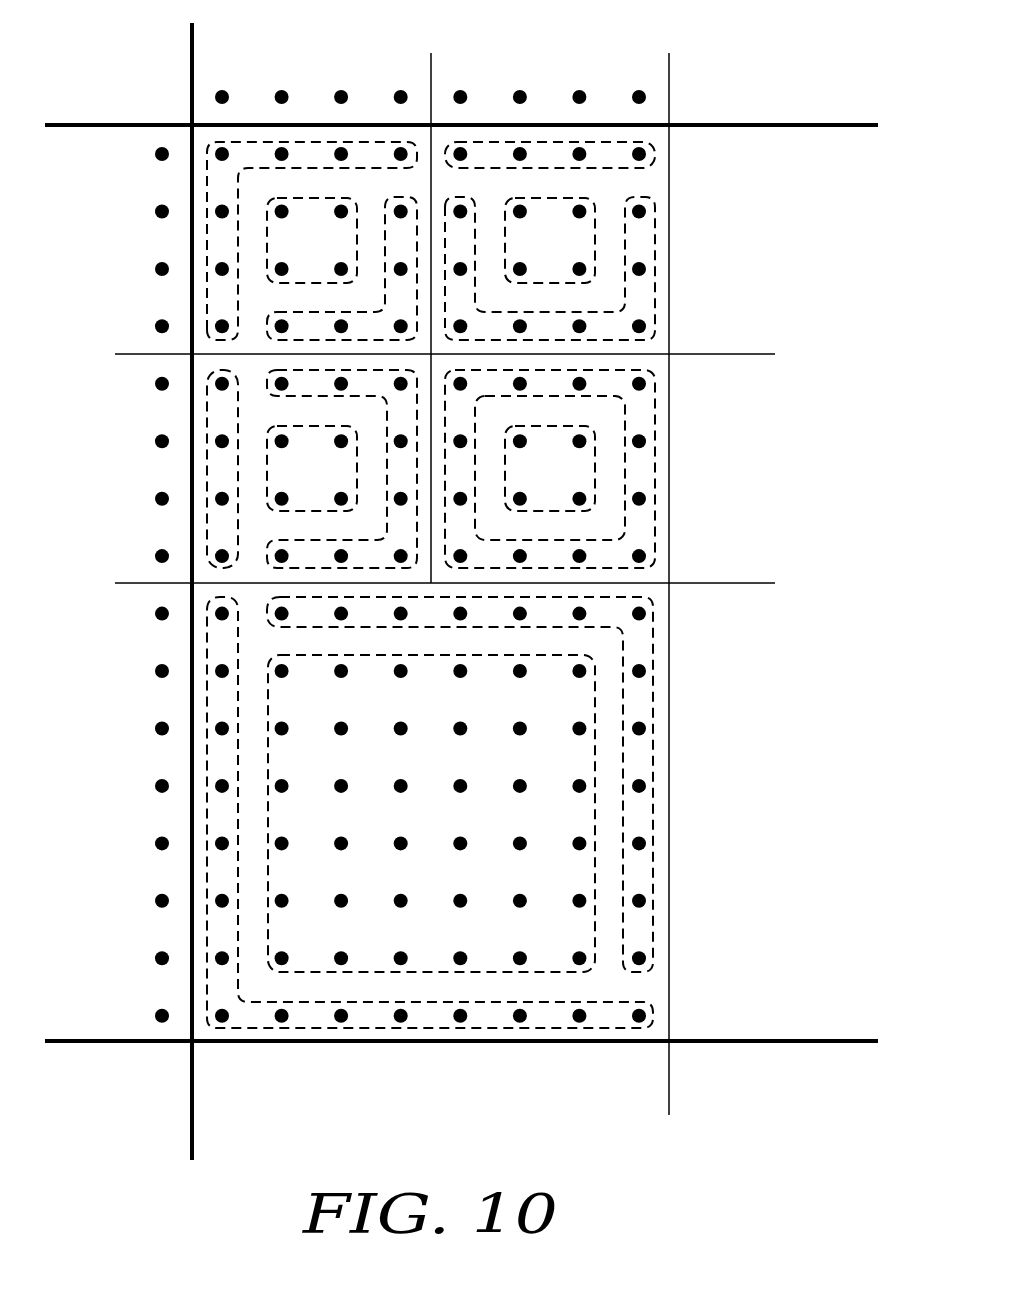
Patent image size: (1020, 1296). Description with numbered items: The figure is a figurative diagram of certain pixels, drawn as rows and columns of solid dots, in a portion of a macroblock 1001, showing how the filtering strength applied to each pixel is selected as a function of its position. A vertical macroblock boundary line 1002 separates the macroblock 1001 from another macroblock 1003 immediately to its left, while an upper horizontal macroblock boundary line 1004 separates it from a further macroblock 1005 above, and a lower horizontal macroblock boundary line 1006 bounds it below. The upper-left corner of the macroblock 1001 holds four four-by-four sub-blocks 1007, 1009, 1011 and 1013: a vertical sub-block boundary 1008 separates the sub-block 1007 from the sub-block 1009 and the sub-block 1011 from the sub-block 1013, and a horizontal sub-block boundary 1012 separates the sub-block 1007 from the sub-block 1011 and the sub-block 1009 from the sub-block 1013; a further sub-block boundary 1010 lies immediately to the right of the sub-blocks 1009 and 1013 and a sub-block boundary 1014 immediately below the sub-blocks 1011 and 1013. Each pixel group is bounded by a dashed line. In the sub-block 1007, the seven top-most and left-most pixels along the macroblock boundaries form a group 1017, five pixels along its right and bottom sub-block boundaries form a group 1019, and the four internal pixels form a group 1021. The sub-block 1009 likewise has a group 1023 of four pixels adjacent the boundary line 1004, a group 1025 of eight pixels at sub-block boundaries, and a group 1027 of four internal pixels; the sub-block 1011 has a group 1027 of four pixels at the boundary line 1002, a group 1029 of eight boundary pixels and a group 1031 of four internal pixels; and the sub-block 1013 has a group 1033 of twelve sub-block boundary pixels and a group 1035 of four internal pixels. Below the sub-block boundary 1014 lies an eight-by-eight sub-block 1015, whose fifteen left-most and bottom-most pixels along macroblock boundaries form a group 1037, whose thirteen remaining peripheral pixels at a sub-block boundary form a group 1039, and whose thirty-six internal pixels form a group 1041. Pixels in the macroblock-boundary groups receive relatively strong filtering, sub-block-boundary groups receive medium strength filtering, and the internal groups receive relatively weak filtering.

The macroblock 1001 is at (772, 827).
The vertical macroblock boundary line 1002 is at (192, 72).
The macroblock 1003 is at (115, 827).
The upper horizontal macroblock boundary line 1004 is at (100, 125).
The macroblock 1005 is at (577, 22).
The lower horizontal macroblock boundary line 1006 is at (95, 1041).
The 4×4 sub-block 1007 is at (337, 255).
The vertical sub-block boundary 1008 is at (431, 72).
The 4×4 sub-block 1009 is at (575, 255).
The sub-block boundary 1010 is at (669, 72).
The 4×4 sub-block 1011 is at (338, 482).
The horizontal sub-block boundary 1012 is at (735, 354).
The 4×4 sub-block 1013 is at (575, 482).
The sub-block boundary 1014 is at (735, 583).
The 8×8 sub-block 1015 is at (458, 827).
The group of pixels 1017 is at (328, 170).
The group of pixels 1019 is at (310, 308).
The group of internal pixels 1021 is at (312, 193).
The group of pixels 1023 is at (567, 170).
The group of pixels 1025 is at (550, 308).
The group of pixels 1027 is at (207, 457).
The group of pixels 1029 is at (310, 538).
The group of internal pixels 1031 is at (313, 424).
The group of pixels 1033 is at (653, 455).
The group of internal pixels 1035 is at (552, 424).
The group of pixels 1037 is at (207, 712).
The group of pixels 1039 is at (655, 635).
The group of internal pixels 1041 is at (595, 693).